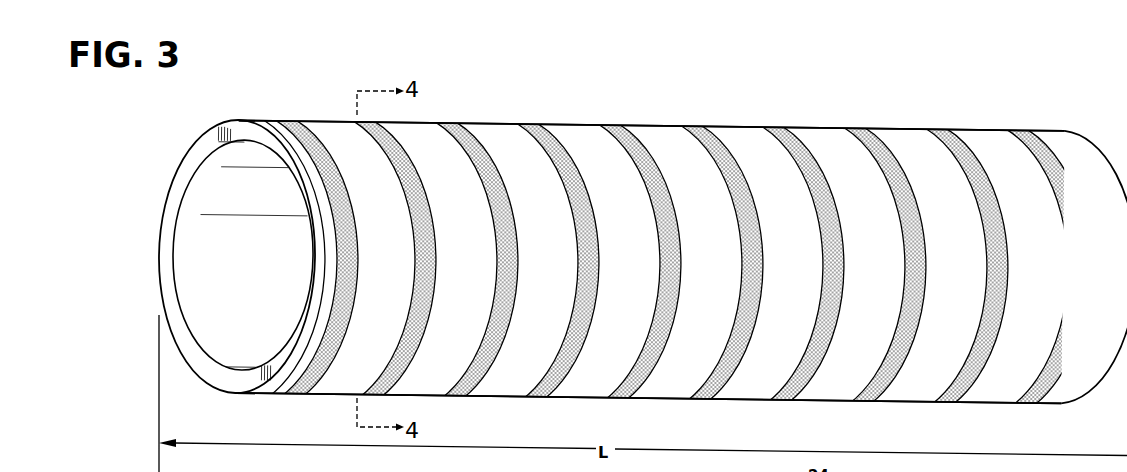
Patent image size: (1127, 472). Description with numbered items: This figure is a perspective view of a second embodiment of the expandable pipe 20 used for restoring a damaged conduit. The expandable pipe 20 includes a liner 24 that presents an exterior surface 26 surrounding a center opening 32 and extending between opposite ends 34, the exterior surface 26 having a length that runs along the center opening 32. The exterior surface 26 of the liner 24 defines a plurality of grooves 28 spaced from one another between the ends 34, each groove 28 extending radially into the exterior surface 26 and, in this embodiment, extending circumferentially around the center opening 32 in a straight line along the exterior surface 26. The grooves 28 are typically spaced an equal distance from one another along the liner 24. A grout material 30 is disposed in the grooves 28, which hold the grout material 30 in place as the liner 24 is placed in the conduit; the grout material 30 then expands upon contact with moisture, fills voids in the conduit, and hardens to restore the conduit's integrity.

The expandable pipe 20 is at (988, 112).
The liner 24 is at (888, 128).
The exterior surface 26 is at (333, 132).
The grooves 28 is at (780, 147).
The grout material 30 is at (452, 124).
The center opening 32 is at (253, 264).
The ends 34 is at (255, 120).